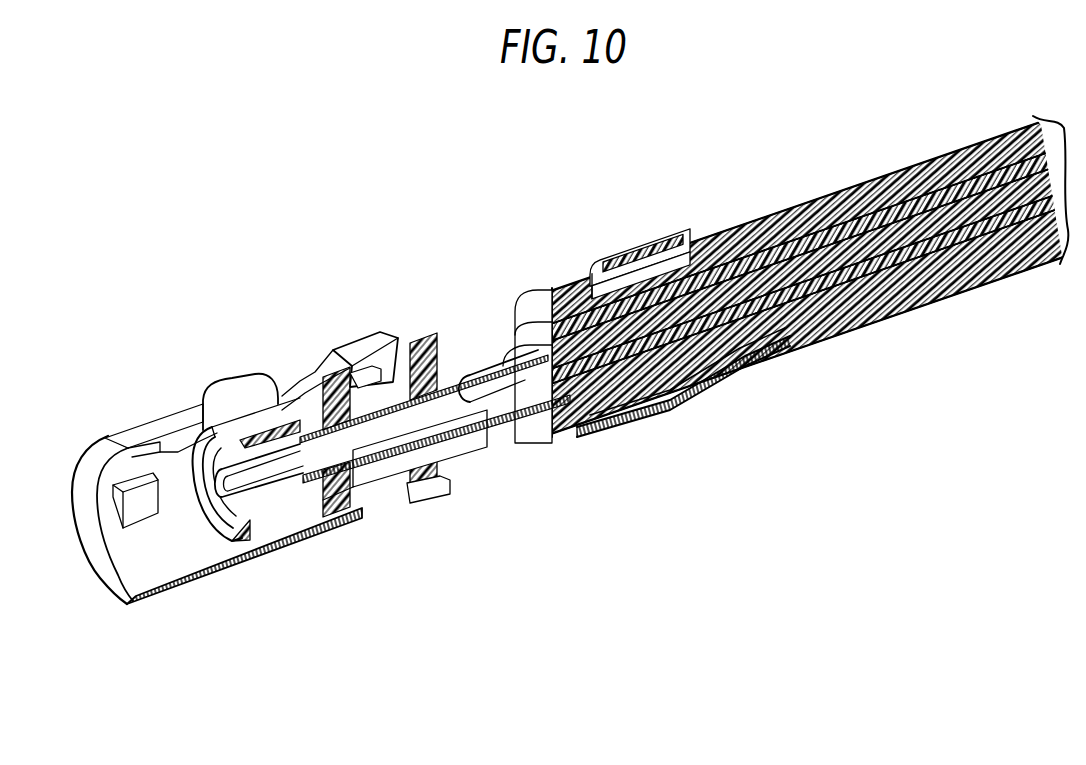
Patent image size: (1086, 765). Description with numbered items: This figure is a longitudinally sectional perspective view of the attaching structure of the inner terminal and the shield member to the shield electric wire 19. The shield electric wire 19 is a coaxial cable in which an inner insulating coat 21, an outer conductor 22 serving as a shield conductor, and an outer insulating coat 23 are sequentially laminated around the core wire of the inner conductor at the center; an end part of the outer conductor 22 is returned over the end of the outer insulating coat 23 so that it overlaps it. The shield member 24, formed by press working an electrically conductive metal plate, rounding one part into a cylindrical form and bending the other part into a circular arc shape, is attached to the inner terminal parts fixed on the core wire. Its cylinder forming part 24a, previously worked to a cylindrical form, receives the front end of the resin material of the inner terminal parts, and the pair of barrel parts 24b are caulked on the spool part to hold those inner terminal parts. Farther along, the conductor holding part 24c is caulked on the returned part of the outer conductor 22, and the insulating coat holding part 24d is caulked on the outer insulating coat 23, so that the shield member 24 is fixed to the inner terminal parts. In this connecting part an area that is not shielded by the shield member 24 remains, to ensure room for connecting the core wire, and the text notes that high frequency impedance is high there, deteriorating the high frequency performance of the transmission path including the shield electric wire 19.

The shield electric wire 19 is at (808, 260).
The inner insulating coat 21 is at (547, 406).
The outer conductor 22 is at (591, 284).
The outer insulating coat 23 is at (821, 214).
The shield member 24 is at (209, 600).
The cylinder forming part 24a is at (137, 432).
The barrel parts 24b is at (367, 340).
The conductor holding part 24c is at (637, 412).
The insulating coat holding part 24d is at (752, 341).